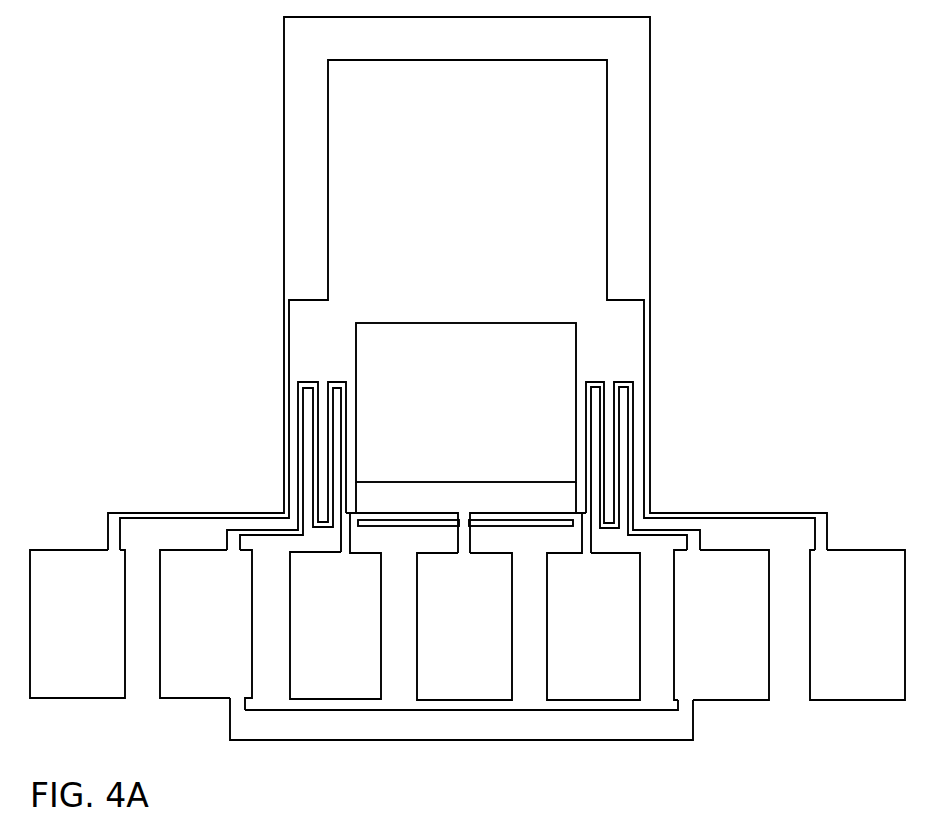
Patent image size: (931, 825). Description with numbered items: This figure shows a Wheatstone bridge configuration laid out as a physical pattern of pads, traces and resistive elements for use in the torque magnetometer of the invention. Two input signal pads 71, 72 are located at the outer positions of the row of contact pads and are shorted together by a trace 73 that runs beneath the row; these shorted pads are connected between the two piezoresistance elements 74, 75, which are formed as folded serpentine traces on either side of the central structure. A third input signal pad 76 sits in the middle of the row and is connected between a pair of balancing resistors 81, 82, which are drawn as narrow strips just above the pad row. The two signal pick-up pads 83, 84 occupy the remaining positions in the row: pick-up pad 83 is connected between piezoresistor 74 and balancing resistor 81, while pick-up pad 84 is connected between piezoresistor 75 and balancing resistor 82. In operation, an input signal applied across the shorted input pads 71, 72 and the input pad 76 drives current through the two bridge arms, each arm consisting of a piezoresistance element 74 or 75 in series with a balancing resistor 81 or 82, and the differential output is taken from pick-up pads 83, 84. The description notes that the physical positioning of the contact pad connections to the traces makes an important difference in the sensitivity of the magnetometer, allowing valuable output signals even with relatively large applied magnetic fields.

The input signal pad 71 is at (736, 688).
The input signal pad 72 is at (203, 680).
The trace 73 is at (652, 735).
The piezoresistance element 74 is at (630, 422).
The piezoresistance element 75 is at (300, 420).
The input signal pad 76 is at (467, 688).
The balancing resistor 81 is at (527, 527).
The balancing resistor 82 is at (397, 526).
The signal pick-up pad 83 is at (592, 688).
The signal pick-up pad 84 is at (331, 688).